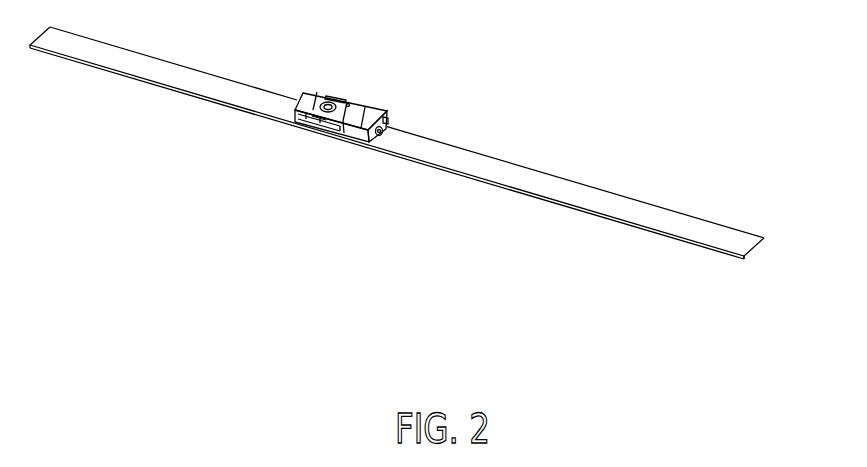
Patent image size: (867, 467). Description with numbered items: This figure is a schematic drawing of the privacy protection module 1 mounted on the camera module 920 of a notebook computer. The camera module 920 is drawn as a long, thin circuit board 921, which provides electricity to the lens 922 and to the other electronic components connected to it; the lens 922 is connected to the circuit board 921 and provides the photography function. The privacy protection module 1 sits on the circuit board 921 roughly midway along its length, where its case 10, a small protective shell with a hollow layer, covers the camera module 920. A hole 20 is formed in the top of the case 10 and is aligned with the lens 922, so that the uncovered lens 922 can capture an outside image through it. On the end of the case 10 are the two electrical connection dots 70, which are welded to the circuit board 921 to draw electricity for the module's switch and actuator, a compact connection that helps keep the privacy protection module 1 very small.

The privacy protection module 1 is at (372, 117).
The case 10 is at (353, 136).
The hole 20 is at (321, 94).
The electrical connection dots 70 is at (389, 119).
The camera module 920 is at (397, 144).
The circuit board 921 is at (563, 195).
The lens 922 is at (332, 97).